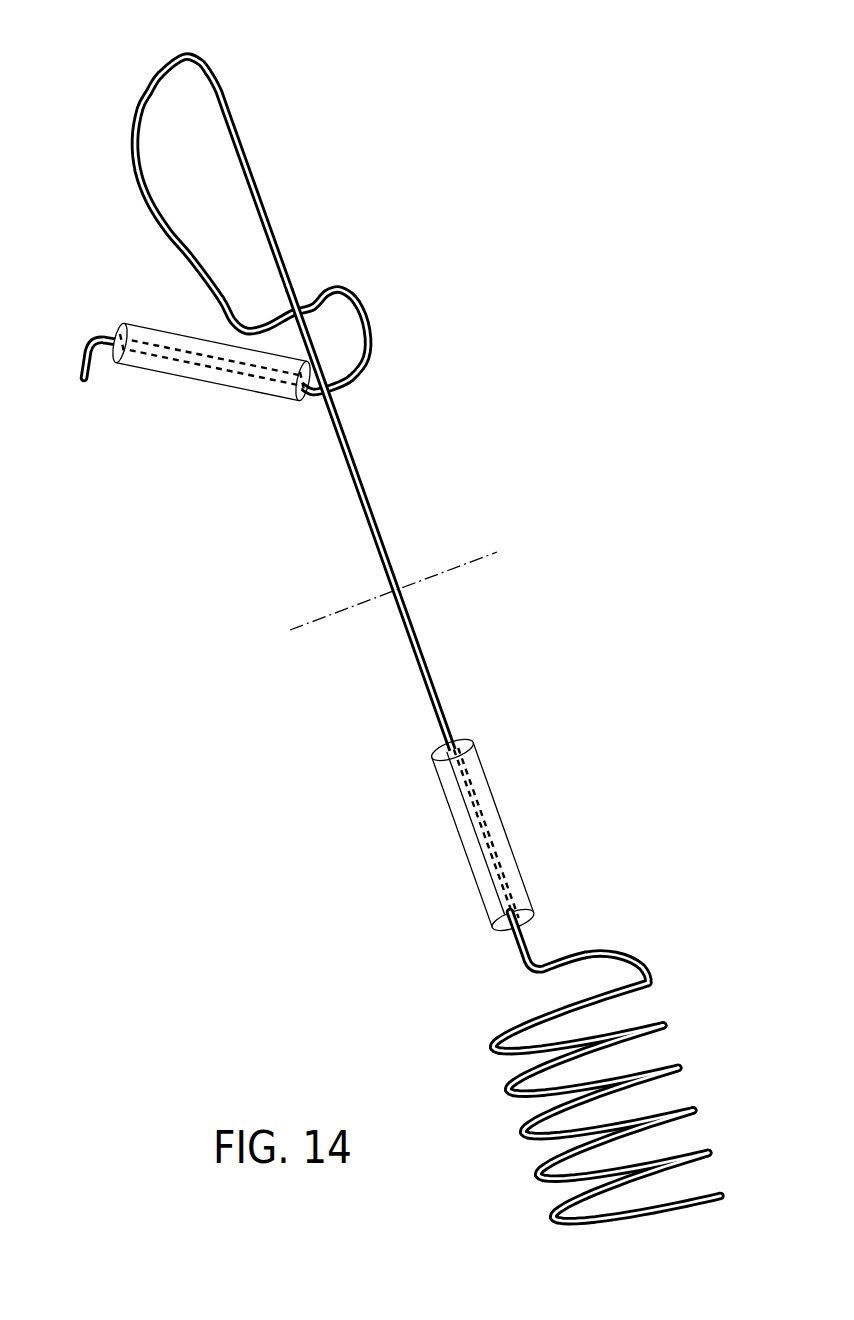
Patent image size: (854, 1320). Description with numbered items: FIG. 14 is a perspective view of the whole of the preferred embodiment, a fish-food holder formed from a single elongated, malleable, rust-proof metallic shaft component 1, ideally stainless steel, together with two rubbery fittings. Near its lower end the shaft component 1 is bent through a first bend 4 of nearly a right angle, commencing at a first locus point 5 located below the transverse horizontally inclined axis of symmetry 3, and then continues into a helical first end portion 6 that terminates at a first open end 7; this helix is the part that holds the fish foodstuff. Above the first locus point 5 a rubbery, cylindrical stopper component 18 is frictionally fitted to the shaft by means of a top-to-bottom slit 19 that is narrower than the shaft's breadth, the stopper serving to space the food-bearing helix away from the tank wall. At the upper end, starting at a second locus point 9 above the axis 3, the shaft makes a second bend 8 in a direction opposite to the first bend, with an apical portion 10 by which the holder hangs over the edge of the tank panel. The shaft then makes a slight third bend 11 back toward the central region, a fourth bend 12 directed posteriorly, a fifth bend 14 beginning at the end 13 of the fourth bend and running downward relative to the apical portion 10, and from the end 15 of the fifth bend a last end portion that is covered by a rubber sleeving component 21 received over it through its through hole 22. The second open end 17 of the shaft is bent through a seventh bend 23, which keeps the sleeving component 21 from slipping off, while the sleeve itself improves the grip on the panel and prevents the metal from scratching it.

The shaft component 1 is at (360, 477).
The transverse horizontally inclined axis of symmetry 3 is at (390, 591).
The first bend 4 is at (580, 953).
The first locus point 5 is at (533, 973).
The helical first end portion 6 is at (678, 1057).
The first open end 7 is at (723, 1187).
The second bend 8 is at (141, 100).
The second locus point 9 is at (203, 58).
The apical portion 10 is at (183, 52).
The third bend 11 is at (138, 188).
The fourth bend 12 is at (248, 326).
The end of fourth bend 13 is at (334, 288).
The fifth bend 14 is at (363, 310).
The end of fifth bend 15 is at (329, 389).
The second open end 17 is at (84, 380).
The stopper component 18 is at (473, 777).
The slit 19 is at (468, 830).
The sleeving component 21 is at (192, 372).
The through hole 22 is at (116, 338).
The seventh bend 23 is at (112, 346).